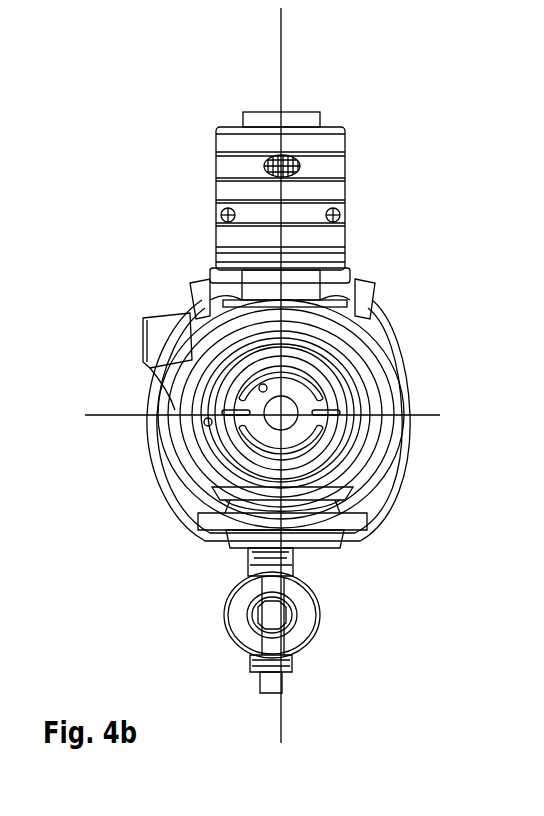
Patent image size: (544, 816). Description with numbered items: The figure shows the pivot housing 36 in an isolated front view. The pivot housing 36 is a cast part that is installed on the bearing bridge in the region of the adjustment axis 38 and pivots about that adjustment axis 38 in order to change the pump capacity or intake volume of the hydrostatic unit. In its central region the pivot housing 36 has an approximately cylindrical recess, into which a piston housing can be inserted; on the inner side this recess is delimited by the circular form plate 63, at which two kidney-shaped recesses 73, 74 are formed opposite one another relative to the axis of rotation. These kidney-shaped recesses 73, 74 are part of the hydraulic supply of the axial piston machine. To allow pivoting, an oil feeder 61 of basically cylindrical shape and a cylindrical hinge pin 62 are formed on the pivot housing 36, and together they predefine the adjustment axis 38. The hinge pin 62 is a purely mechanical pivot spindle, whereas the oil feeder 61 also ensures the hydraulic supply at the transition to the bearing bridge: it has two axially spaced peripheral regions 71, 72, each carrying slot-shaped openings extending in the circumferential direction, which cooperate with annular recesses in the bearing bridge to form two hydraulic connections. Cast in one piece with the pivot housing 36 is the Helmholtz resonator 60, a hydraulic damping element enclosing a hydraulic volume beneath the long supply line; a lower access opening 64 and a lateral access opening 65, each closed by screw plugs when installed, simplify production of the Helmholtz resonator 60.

The adjustment axis 38 is at (281, 32).
The pivot housing 36 is at (438, 273).
The oil feeder 61 is at (353, 114).
The peripheral region 71 is at (214, 158).
The peripheral region 72 is at (214, 214).
The circular form plate 63 is at (308, 405).
The kidney-shaped recess 73 is at (231, 383).
The kidney-shaped recess 74 is at (231, 438).
The hinge pin 62 is at (312, 545).
The Helmholtz resonator 60 is at (332, 628).
The lateral access opening 65 is at (284, 622).
The lower access opening 64 is at (253, 680).